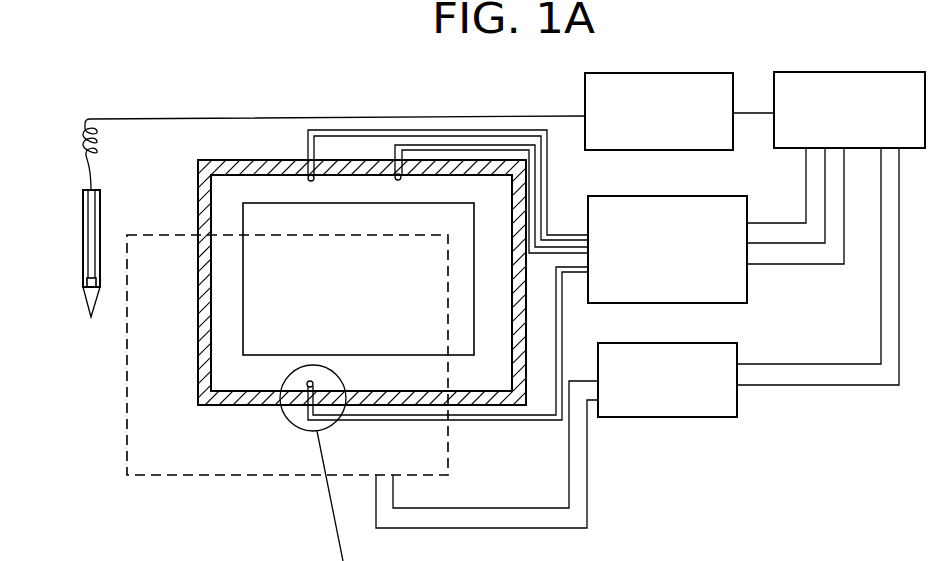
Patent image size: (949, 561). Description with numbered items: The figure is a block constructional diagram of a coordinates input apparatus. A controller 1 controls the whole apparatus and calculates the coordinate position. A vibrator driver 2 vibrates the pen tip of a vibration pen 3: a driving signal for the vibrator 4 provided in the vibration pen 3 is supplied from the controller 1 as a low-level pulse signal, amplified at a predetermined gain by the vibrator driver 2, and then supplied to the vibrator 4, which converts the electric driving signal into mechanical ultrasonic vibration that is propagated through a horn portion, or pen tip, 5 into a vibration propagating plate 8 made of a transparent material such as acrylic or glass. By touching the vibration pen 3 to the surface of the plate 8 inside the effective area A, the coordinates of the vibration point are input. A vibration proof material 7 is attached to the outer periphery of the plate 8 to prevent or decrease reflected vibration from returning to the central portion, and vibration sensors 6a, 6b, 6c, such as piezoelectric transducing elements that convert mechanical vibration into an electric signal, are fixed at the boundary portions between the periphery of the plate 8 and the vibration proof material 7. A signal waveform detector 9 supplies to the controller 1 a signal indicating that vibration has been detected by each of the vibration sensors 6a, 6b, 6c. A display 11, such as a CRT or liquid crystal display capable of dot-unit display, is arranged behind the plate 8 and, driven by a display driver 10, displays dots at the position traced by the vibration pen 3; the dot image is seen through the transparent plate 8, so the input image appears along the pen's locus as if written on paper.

The controller 1 is at (886, 72).
The vibrator driver 2 is at (710, 73).
The vibration pen 3 is at (100, 197).
The vibrator 4 is at (100, 282).
The horn portion (pen tip) 5 is at (90, 302).
The vibration sensor 6a is at (314, 180).
The vibration sensor 6b is at (401, 180).
The vibration sensor 6c is at (306, 431).
The vibration proof material 7 is at (468, 160).
The vibration propagating plate 8 is at (255, 187).
The signal waveform detector 9 is at (713, 196).
The display driver 10 is at (715, 344).
The display 11 is at (245, 476).
The effective area A is at (235, 405).